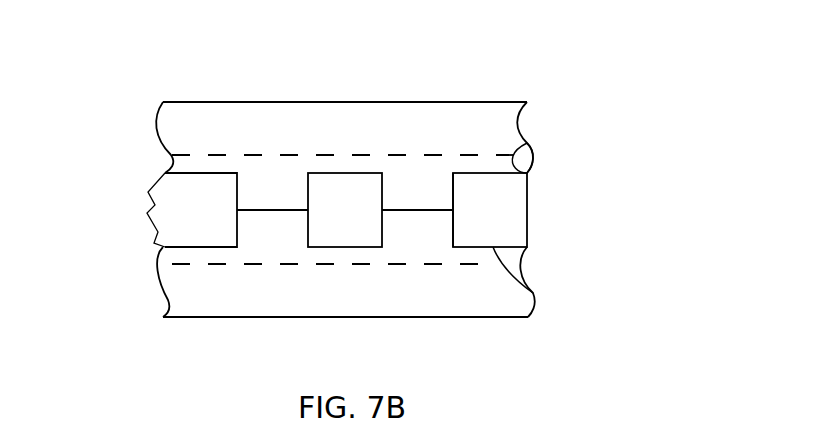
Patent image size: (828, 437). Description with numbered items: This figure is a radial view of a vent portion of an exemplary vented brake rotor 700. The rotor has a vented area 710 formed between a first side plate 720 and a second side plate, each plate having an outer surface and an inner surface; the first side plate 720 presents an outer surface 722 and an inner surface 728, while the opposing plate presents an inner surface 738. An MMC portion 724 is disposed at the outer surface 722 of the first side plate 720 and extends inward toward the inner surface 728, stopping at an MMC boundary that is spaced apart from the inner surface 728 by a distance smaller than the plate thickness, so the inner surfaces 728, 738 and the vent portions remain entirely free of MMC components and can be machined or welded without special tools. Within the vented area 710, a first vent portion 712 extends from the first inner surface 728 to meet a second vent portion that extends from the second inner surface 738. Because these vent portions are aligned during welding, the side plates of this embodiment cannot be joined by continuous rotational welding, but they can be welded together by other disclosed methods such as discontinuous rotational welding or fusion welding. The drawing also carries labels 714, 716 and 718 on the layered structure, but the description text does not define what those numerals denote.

The vented brake rotor 700 is at (573, 80).
The vented area 710 is at (146, 212).
The first vent portion 712 is at (447, 188).
The second layer 714 is at (358, 317).
The interface layer 716 is at (395, 153).
The third layer 718 is at (447, 228).
The first side plate 720 is at (118, 287).
The outer surface 722 is at (198, 102).
The MMC portion 724 is at (293, 122).
The inner surface 728 is at (516, 150).
The inner surface 738 is at (534, 292).